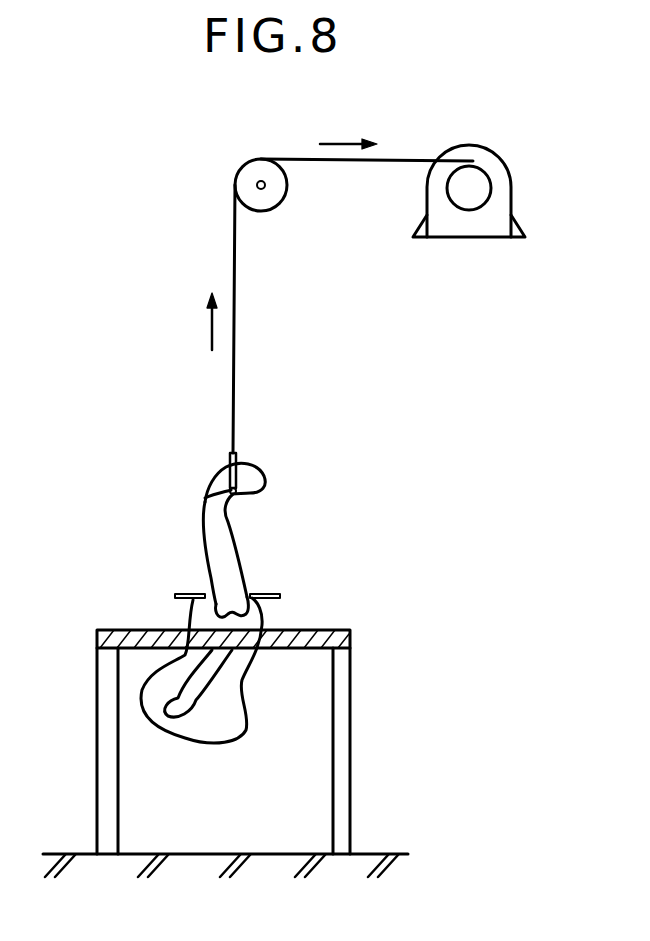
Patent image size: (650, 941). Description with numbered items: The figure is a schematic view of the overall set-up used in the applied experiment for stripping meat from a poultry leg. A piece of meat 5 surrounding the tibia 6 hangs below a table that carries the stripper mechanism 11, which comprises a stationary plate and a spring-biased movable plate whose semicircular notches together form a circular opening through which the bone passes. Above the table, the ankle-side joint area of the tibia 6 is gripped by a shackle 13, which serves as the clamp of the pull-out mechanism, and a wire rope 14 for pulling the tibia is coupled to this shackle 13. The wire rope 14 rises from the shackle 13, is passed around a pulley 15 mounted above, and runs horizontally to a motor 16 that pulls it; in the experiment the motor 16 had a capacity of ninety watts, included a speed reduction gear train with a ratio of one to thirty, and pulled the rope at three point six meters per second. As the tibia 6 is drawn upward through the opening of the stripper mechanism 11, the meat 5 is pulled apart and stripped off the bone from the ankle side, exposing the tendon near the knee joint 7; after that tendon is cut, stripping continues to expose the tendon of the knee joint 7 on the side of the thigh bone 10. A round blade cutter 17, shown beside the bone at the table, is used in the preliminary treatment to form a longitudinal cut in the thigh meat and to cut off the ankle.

The meat 5 is at (252, 710).
The tibia 6 is at (237, 530).
The knee joint 7 is at (198, 612).
The thigh bone 10 is at (150, 668).
The stripper mechanism 11 is at (328, 630).
The shackle 13 is at (238, 456).
The wire rope 14 is at (412, 160).
The pulley 15 is at (286, 158).
The motor 16 is at (512, 197).
The round blade cutter 17 is at (279, 593).